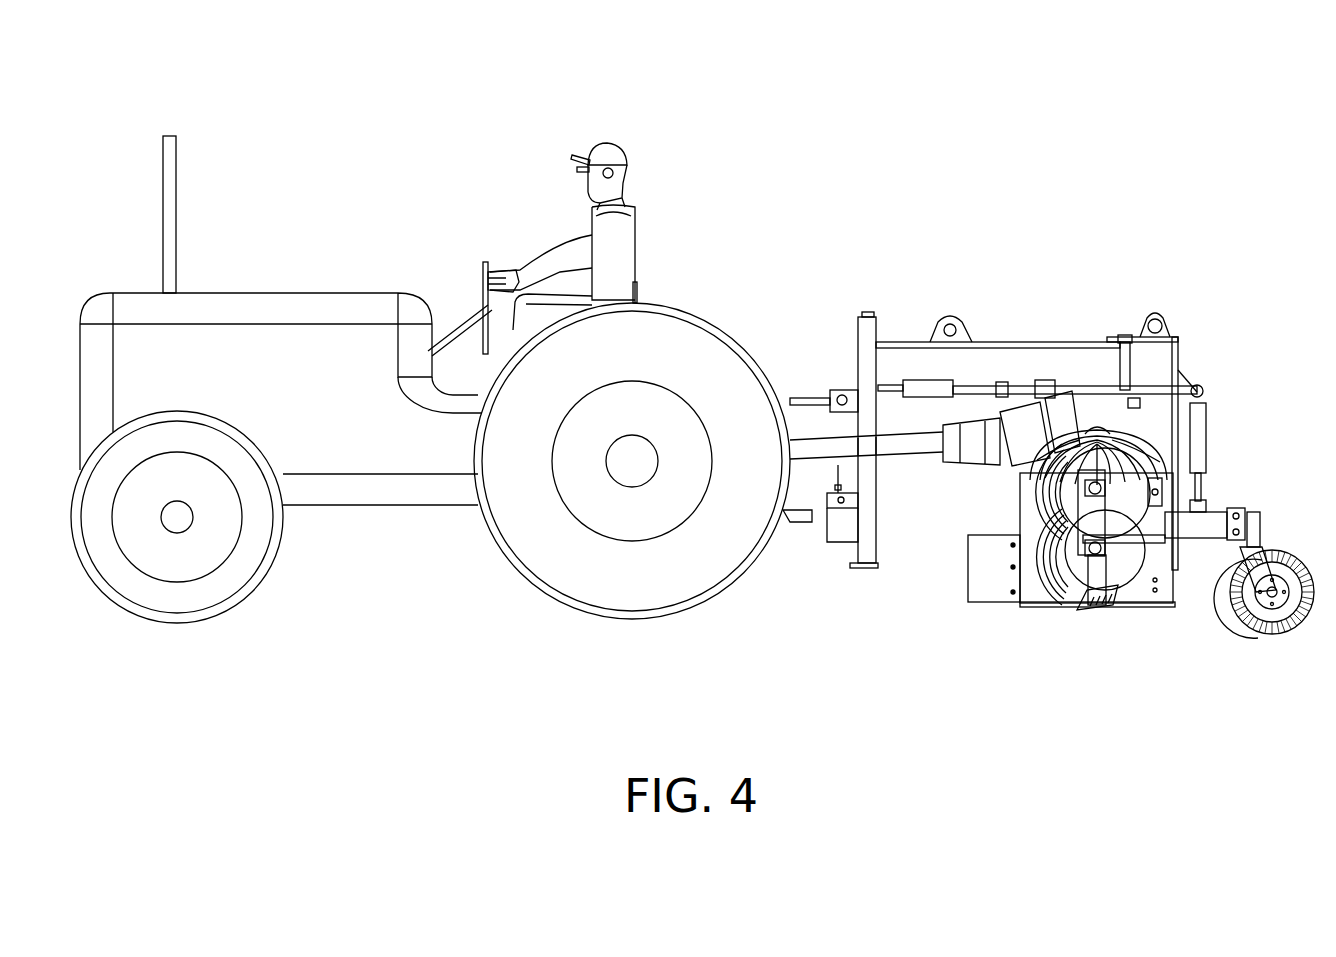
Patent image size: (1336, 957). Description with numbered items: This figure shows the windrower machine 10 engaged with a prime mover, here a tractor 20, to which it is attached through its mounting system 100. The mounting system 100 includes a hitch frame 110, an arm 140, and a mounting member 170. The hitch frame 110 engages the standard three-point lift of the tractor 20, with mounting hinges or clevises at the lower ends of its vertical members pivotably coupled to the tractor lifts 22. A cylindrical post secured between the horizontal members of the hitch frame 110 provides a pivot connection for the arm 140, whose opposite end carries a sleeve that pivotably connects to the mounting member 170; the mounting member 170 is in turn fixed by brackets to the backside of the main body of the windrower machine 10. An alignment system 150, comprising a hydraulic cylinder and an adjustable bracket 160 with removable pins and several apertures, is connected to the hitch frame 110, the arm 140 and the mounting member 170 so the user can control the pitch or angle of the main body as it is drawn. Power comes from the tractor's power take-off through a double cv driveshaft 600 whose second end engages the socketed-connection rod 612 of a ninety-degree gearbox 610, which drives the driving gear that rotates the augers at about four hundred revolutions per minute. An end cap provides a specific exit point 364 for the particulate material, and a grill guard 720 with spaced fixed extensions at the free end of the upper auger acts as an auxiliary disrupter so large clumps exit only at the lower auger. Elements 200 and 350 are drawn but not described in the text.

The windrower machine 10 is at (1140, 222).
The tractor 20 is at (375, 262).
The tractor lifts 22 is at (797, 552).
The mounting system 100 is at (965, 270).
The hitch frame 110 is at (858, 340).
The arm 140 is at (998, 340).
The alignment system 150 is at (922, 370).
The adjustable bracket 160 is at (1080, 375).
The mounting member 170 is at (1183, 340).
The caster wheel 200 is at (1278, 546).
The deflector flap 350 is at (1090, 612).
The exit point 364 is at (1125, 517).
The double cv driveshaft 600 is at (898, 445).
The 90° gearbox 610 is at (1049, 412).
The socketed-connection rod 612 is at (1000, 456).
The grill guard 720 is at (1155, 432).